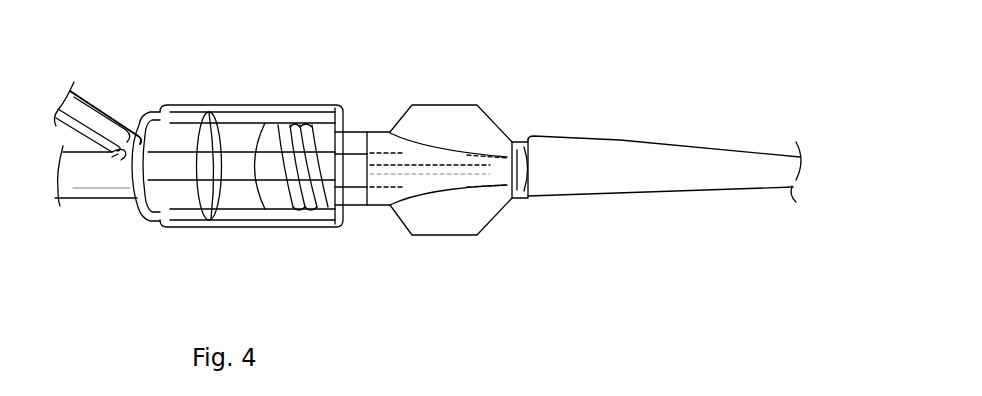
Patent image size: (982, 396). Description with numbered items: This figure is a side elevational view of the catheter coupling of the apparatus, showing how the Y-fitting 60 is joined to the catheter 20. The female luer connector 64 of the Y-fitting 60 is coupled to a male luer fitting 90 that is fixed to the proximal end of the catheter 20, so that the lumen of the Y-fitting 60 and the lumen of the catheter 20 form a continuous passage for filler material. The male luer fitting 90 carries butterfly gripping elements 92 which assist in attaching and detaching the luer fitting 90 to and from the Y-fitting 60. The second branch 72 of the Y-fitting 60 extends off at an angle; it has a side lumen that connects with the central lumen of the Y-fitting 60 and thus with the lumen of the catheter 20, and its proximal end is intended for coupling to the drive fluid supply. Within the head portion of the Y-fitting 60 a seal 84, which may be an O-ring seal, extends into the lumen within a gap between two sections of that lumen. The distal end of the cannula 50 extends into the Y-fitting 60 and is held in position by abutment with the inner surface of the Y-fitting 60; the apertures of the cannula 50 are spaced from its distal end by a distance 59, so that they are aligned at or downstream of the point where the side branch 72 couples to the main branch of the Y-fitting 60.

The catheter 20 is at (637, 191).
The cannula 50 is at (348, 160).
The distance 59 is at (478, 262).
The Y-fitting 60 is at (83, 199).
The female luer fitting 64 is at (300, 100).
The second branch 72 is at (88, 100).
The seal 84 is at (211, 107).
The male luer fitting 90 is at (390, 107).
The butterfly gripping elements 92 is at (461, 106).